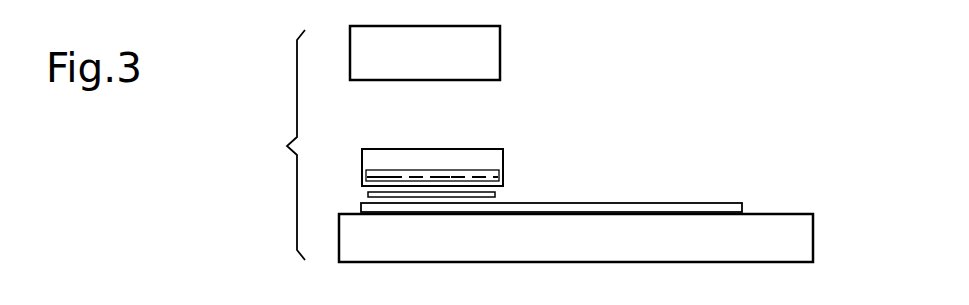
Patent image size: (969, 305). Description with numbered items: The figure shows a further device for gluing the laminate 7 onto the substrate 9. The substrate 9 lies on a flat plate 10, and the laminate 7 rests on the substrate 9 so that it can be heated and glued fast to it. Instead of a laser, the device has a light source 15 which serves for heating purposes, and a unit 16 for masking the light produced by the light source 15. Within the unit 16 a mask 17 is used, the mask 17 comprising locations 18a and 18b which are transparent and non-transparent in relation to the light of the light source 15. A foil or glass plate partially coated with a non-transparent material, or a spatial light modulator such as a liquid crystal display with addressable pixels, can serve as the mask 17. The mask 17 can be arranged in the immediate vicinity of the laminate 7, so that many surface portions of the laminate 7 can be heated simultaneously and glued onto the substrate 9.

The light source 15 is at (490, 50).
The unit for masking the light 16 is at (503, 160).
The mask 17 is at (366, 171).
The transparent locations 18a is at (420, 177).
The non-transparent locations 18b is at (412, 177).
The laminate 7 is at (496, 196).
The substrate 9 is at (742, 204).
The plate 10 is at (808, 240).